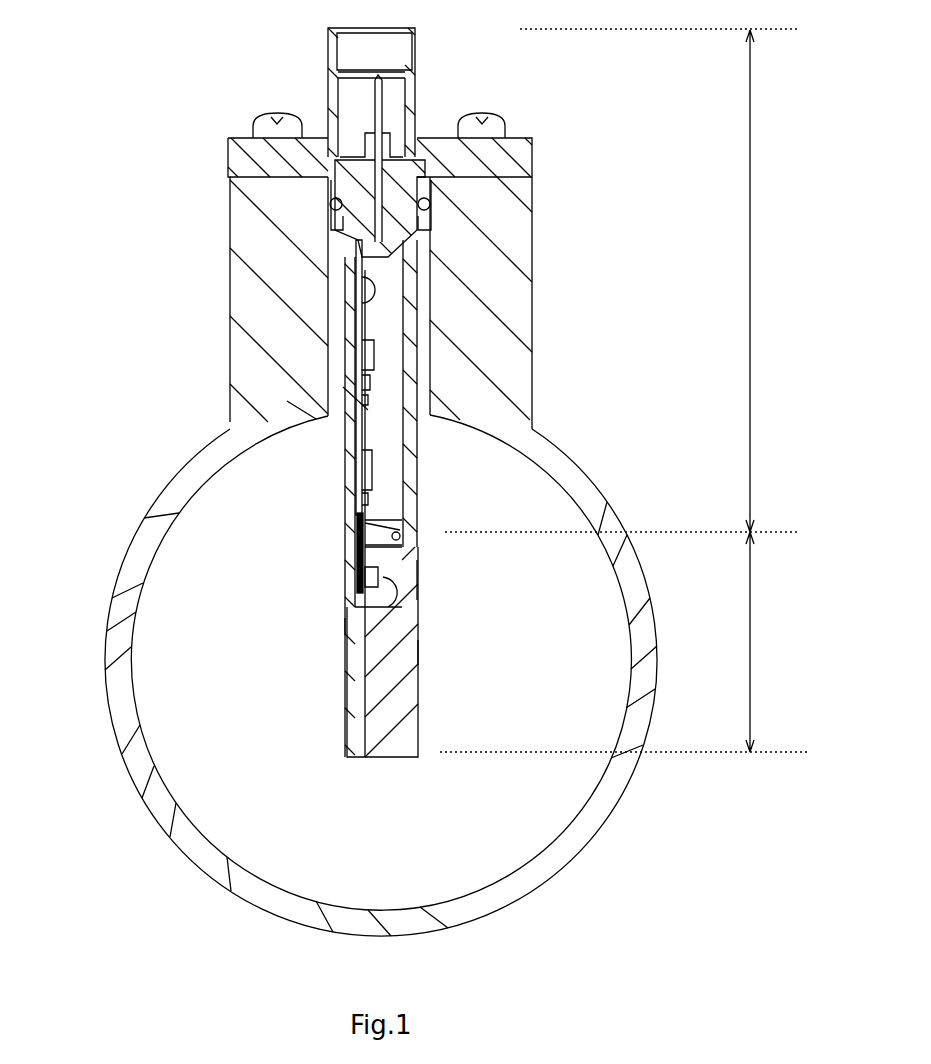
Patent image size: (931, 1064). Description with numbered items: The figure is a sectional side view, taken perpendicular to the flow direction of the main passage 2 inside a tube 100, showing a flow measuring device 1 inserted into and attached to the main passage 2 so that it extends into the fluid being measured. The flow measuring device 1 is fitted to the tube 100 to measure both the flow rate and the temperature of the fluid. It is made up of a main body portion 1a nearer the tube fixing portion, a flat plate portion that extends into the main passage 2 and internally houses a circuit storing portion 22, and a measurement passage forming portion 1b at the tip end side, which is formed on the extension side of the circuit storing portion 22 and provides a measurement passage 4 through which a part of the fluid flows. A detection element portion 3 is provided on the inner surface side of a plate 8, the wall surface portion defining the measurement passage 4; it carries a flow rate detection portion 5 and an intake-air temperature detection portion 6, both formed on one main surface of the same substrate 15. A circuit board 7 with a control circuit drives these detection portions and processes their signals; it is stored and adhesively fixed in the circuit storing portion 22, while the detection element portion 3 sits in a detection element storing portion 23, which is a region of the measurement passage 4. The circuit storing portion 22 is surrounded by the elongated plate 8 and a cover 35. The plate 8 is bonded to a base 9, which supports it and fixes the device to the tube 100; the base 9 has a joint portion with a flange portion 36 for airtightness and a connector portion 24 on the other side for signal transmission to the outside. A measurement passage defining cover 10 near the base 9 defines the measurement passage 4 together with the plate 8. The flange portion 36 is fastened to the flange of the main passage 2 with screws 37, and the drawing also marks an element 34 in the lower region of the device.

The flow measuring device 1 is at (452, 91).
The main body portion 1a is at (752, 272).
The measurement passage forming portion 1b is at (752, 617).
The main passage 2 is at (245, 546).
The detection element portion 3 is at (390, 652).
The measurement passage 4 is at (398, 582).
The flow rate detection portion 5 is at (385, 573).
The intake-air temperature detection portion 6 is at (390, 593).
The circuit board 7 is at (357, 363).
The plate 8 is at (348, 627).
The base 9 is at (262, 158).
The measurement passage defining cover 10 is at (418, 656).
The substrate 15 is at (350, 533).
The circuit storing portion 22 is at (383, 432).
The detection element storing portion 23 is at (373, 562).
The connector portion 24 is at (336, 78).
The lower member 34 is at (355, 600).
The cover 35 is at (418, 357).
The flange portion 36 is at (253, 283).
The screws 37 is at (498, 128).
The tube 100 is at (205, 845).